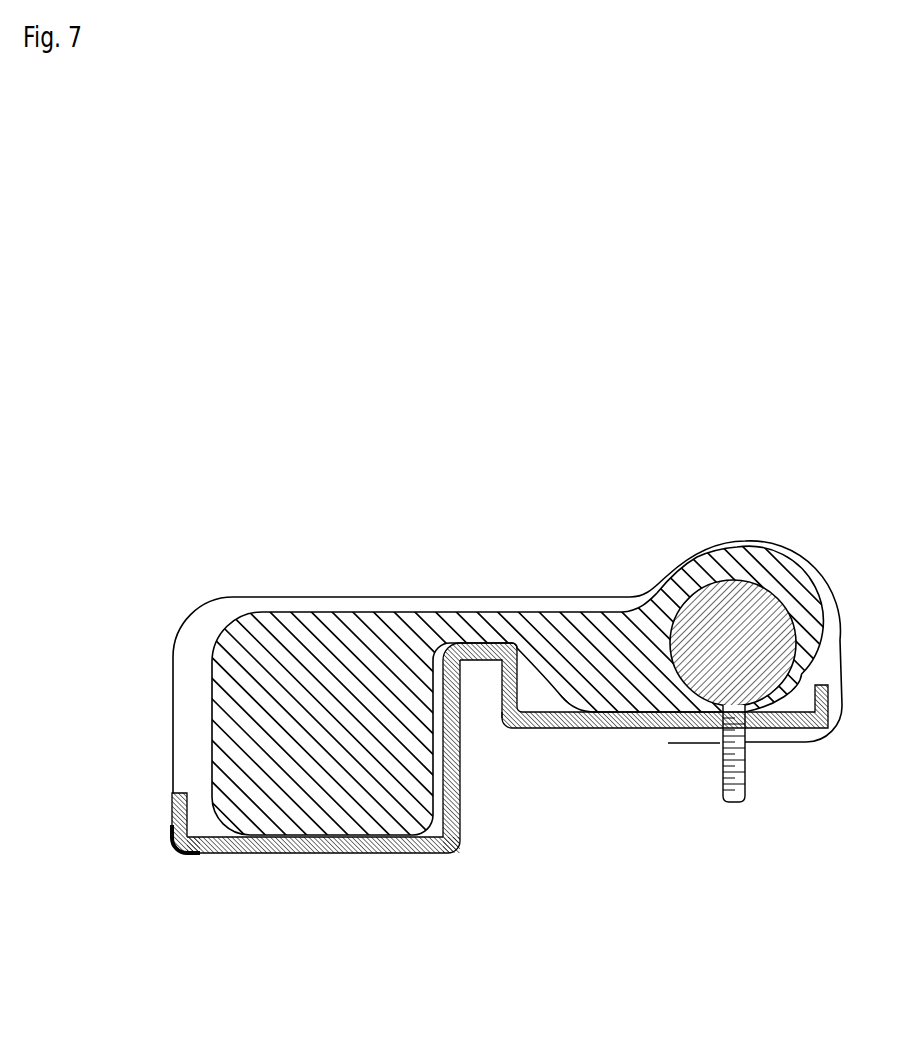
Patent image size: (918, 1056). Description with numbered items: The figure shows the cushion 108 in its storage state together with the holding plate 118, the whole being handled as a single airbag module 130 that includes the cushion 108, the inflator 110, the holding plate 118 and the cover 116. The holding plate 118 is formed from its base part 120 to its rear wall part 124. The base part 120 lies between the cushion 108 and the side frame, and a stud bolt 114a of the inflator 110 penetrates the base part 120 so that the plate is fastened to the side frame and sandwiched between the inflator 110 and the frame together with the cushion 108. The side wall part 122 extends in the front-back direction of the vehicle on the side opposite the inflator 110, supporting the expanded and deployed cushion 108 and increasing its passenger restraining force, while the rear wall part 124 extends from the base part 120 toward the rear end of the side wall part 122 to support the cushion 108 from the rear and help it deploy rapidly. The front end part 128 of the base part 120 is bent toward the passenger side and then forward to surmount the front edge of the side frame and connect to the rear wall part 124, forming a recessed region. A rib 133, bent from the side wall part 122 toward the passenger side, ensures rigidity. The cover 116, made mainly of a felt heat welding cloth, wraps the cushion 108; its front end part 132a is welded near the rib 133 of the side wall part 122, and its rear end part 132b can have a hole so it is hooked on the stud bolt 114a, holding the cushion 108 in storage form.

The airbag module 130 is at (254, 488).
The cushion 108 is at (555, 630).
The inflator 110 is at (741, 579).
The cover 116 is at (173, 705).
The holding plate 118 is at (220, 855).
The base part 120 is at (591, 730).
The side wall part 122 is at (310, 855).
The rear wall part 124 is at (447, 723).
The front end part 128 is at (517, 645).
The front end part 132a is at (170, 824).
The rear end part 132b is at (690, 745).
The rib 133 is at (182, 793).
The stud bolt 114a is at (745, 782).